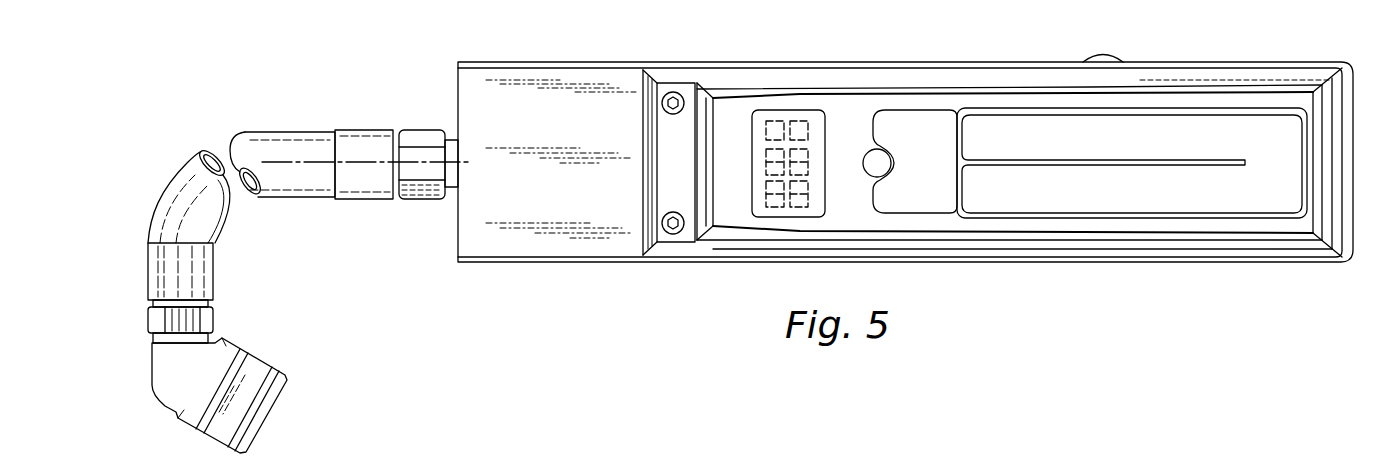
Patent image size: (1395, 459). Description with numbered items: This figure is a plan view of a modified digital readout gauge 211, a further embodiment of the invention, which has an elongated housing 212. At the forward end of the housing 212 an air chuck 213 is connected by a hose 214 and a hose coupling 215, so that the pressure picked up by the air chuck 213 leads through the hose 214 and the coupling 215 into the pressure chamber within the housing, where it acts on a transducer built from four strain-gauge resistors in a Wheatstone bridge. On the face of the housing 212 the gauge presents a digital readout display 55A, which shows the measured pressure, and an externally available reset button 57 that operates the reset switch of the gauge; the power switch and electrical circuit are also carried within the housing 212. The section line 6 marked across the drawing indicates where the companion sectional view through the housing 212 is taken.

The section line 6- 6 is at (283, 173).
The digital readout display 55A is at (777, 120).
The reset button 57 is at (872, 172).
The digital readout gauge 211 is at (922, 50).
The housing 212 is at (1037, 66).
The air chuck 213 is at (286, 402).
The hose 214 is at (218, 214).
The hose coupling 215 is at (423, 131).